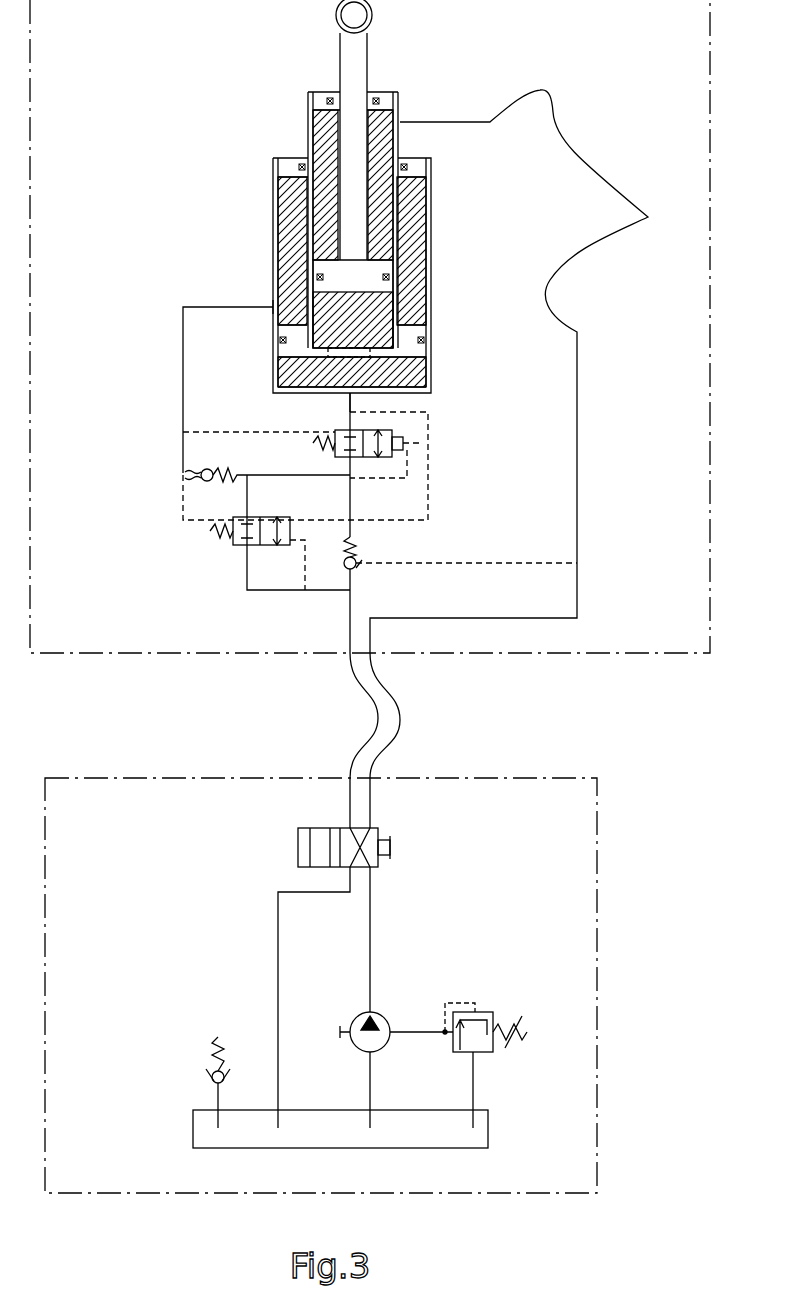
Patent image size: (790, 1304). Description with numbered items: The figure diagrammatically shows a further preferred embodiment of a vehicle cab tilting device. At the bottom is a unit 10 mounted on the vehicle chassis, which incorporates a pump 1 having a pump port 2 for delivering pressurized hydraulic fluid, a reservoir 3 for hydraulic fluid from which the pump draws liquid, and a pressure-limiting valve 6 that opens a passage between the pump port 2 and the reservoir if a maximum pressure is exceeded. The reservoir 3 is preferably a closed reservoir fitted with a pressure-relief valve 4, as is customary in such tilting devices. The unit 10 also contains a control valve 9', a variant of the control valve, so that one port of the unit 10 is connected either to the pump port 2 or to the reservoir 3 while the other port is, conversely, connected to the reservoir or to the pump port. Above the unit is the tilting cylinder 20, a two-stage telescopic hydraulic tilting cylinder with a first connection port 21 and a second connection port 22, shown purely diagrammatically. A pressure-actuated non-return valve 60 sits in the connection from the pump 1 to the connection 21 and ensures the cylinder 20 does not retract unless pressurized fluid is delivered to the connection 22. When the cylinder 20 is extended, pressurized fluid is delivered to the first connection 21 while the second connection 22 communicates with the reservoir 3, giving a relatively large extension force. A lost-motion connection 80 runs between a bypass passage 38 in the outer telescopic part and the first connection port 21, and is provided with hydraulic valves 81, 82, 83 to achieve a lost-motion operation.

The pump 1 is at (388, 1022).
The pump port 2 is at (383, 1011).
The reservoir 3 is at (488, 1128).
The pressure-relief valve 4 is at (212, 1057).
The pressure-limiting valve 6 is at (502, 998).
The control valve 9' is at (395, 847).
The unit 10 is at (598, 828).
The tilting cylinder 20 is at (265, 214).
The first connection port 21 is at (355, 403).
The second connection port 22 is at (403, 117).
The bypass passage 38 is at (272, 306).
The pressure-actuated non-return valve 60 is at (388, 556).
The lost-motion connection 80 is at (183, 385).
The hydraulic valve 81 is at (413, 425).
The hydraulic valve 82 is at (210, 453).
The hydraulic valve 83 is at (212, 560).